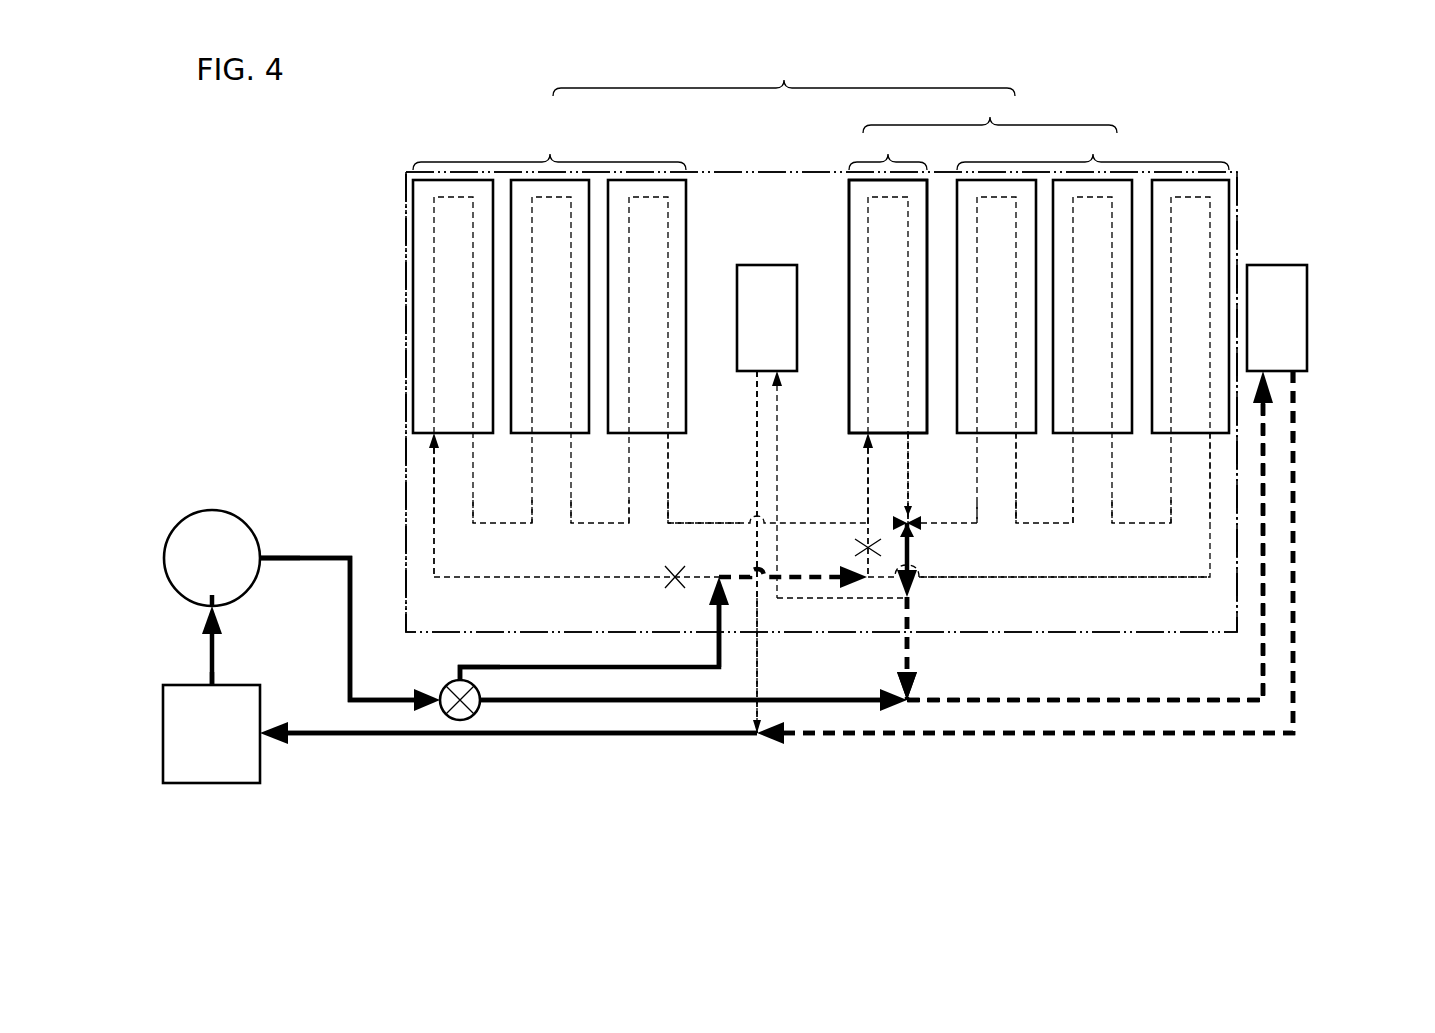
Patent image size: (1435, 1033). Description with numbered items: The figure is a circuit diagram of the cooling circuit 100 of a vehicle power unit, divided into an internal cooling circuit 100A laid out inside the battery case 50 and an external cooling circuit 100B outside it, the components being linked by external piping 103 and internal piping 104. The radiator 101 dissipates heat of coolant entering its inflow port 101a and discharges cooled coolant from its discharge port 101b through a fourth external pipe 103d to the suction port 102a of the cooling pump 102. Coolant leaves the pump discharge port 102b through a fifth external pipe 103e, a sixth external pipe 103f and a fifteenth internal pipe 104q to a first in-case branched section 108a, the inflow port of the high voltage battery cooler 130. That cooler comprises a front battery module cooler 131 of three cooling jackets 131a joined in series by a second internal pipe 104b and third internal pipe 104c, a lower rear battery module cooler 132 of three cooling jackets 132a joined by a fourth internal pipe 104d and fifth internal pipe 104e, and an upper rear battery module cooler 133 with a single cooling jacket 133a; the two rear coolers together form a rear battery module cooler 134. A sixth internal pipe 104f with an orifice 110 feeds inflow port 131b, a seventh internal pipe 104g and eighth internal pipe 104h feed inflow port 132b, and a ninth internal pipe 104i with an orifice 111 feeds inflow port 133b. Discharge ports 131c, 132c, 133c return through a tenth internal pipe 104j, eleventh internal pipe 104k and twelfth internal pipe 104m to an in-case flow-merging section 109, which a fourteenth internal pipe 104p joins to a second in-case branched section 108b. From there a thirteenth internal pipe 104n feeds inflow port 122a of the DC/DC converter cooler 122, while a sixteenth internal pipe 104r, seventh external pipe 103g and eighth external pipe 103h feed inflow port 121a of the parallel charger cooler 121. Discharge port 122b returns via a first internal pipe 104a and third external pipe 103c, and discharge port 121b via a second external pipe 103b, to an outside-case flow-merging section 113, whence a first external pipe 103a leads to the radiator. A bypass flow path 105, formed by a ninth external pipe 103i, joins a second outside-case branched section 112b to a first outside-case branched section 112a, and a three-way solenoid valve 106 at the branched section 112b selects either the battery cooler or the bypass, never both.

The battery case 50 is at (1240, 182).
The cooling circuit 100 is at (1224, 130).
The internal cooling circuit 100A is at (414, 241).
The external cooling circuit 100B is at (1240, 628).
The high voltage battery cooler 130 is at (784, 76).
The front battery module cooler 131 is at (550, 154).
The rear battery module cooler 134 is at (990, 112).
The upper rear battery module cooler 133 is at (888, 280).
The lower rear battery module cooler 132 is at (1093, 280).
The cooling jacket 131a is at (608, 290).
The cooling jacket 133a is at (849, 208).
The cooling jacket 132a is at (1036, 215).
The DC/DC converter cooler 122 is at (760, 265).
The inflow port 122a is at (779, 374).
The discharge port 122b is at (757, 374).
The charger cooler 121 is at (1307, 282).
The inflow port 121a is at (1265, 375).
The discharge port 121b is at (1294, 372).
The inflow port 131b is at (432, 440).
The discharge port 131c is at (670, 436).
The inflow port 133b is at (866, 436).
The discharge port 133c is at (909, 436).
The discharge port 132c is at (1017, 436).
The inflow port 132b is at (1237, 452).
The internal piping 104 is at (1208, 548).
The first internal pipe 104a is at (755, 488).
The second internal pipe 104b is at (500, 525).
The third internal pipe 104c is at (598, 525).
The fourth internal pipe 104d is at (1142, 525).
The fifth internal pipe 104e is at (1044, 525).
The sixth internal pipe 104f is at (432, 468).
The seventh internal pipe 104g is at (1095, 580).
The eighth internal pipe 104h is at (812, 580).
The ninth internal pipe 104i is at (866, 490).
The tenth internal pipe 104j is at (700, 525).
The eleventh internal pipe 104k is at (962, 523).
The twelfth internal pipe 104m is at (907, 490).
The thirteenth internal pipe 104n is at (760, 518).
The fourteenth internal pipe 104p is at (895, 566).
The fifteenth internal pipe 104q is at (719, 630).
The sixteenth internal pipe 104r is at (910, 617).
The orifice 110 is at (666, 589).
The orifice 111 is at (852, 548).
The in-case flow-merging section 109 is at (910, 525).
The first in-case branched section 108a is at (718, 588).
The second in-case branched section 108b is at (910, 594).
The cooling pump 102 is at (212, 510).
The suction port 102a is at (216, 610).
The discharge port 102b is at (260, 556).
The radiator 101 is at (210, 783).
The inflow port 101a is at (262, 732).
The discharge port 101b is at (214, 686).
The external piping 103 is at (855, 736).
The first external pipe 103a is at (322, 735).
The second external pipe 103b is at (1055, 736).
The third external pipe 103c is at (758, 698).
The fourth external pipe 103d is at (216, 655).
The fifth external pipe 103e is at (322, 558).
The sixth external pipe 103f is at (460, 672).
The seventh external pipe 103g is at (910, 672).
The eighth external pipe 103h is at (1182, 700).
The ninth external pipe 103i is at (809, 665).
The bypass flow path 105 is at (782, 698).
The three-way solenoid valve 106 is at (490, 731).
The second outside-case branched section 112b is at (460, 720).
The first outside-case branched section 112a is at (910, 698).
The outside-case flow-merging section 113 is at (758, 736).